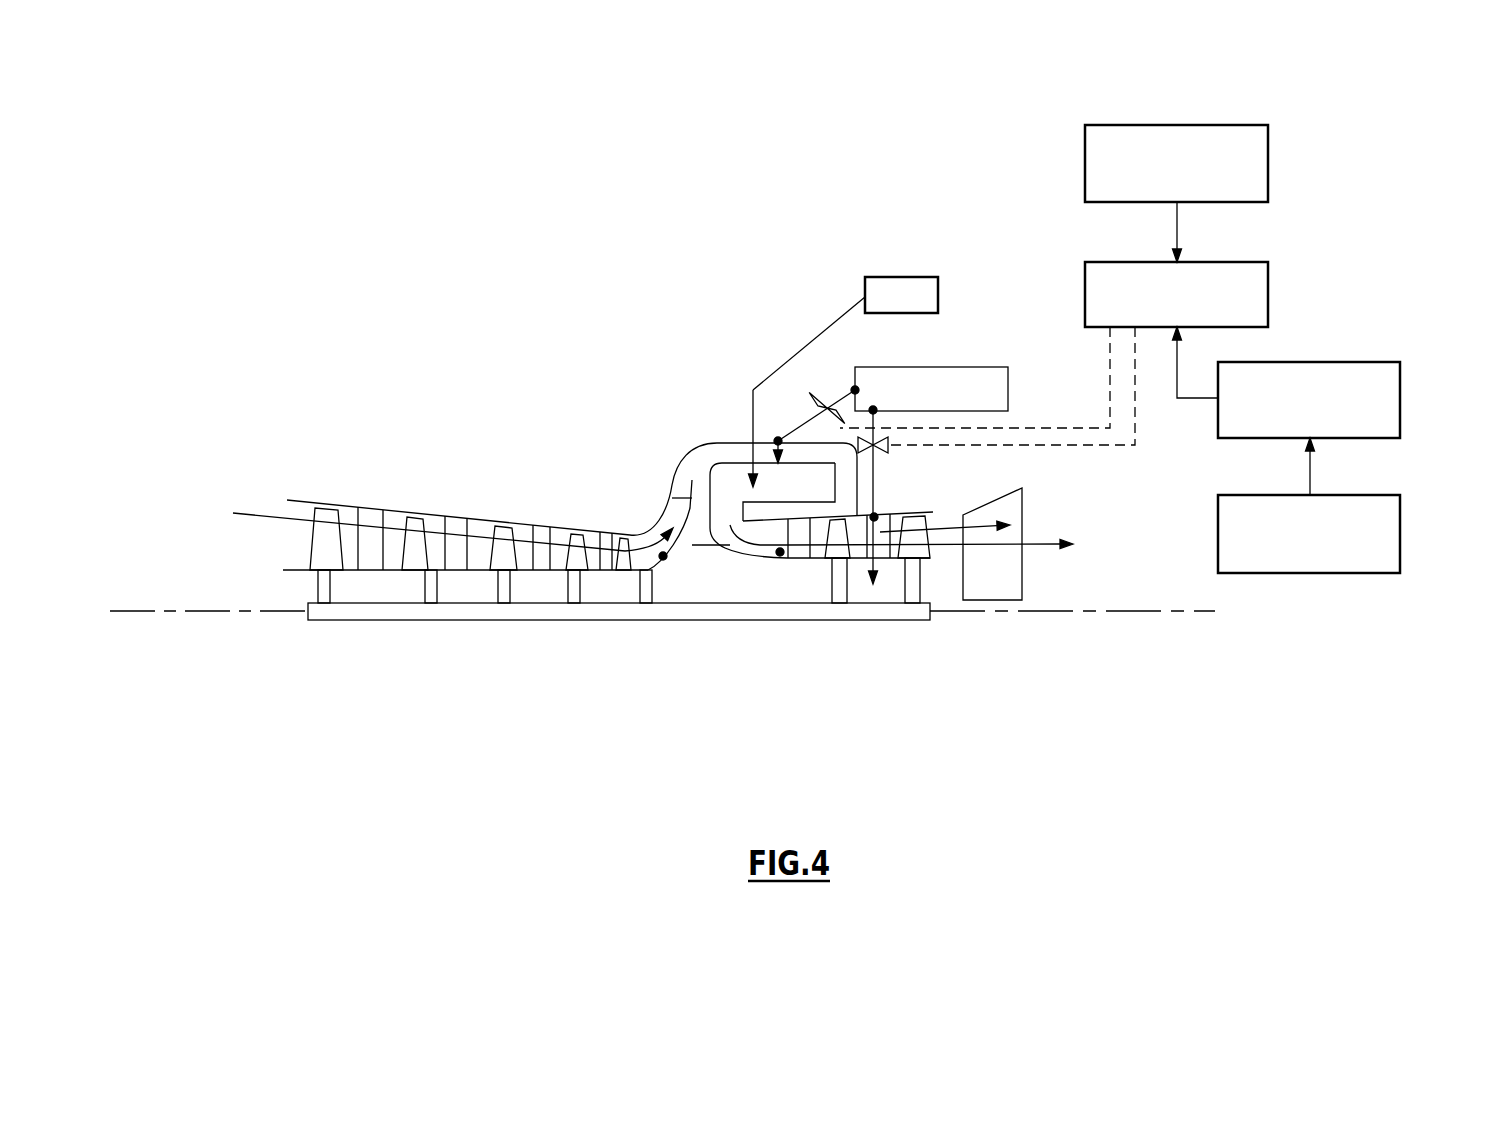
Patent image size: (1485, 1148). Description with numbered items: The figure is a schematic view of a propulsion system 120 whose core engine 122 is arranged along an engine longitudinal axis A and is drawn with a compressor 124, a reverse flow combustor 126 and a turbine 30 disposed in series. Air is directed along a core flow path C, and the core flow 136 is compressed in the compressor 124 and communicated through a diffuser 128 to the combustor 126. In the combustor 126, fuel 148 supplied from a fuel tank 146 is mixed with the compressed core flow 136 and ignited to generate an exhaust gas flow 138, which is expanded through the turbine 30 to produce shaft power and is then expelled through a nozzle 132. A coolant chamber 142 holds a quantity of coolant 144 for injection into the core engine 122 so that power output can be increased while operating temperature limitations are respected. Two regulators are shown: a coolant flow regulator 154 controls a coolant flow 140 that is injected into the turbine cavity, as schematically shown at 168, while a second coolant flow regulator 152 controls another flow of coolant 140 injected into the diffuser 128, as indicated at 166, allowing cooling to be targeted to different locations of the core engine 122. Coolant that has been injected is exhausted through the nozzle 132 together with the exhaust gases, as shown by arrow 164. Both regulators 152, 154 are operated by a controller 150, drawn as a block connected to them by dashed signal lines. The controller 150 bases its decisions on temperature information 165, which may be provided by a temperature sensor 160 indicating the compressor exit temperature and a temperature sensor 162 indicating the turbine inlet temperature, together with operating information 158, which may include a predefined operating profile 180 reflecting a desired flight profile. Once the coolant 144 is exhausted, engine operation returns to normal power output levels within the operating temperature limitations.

The propulsion system 120 is at (298, 247).
The core engine 122 is at (283, 427).
The compressor 124 is at (445, 606).
The reverse flow combustor 126 is at (709, 590).
The turbine 30 is at (913, 615).
The diffuser 128 is at (730, 453).
The nozzle 132 is at (1012, 583).
The core flow 136 is at (481, 559).
The exhaust gas flow 138 is at (957, 547).
The coolant flow 140 is at (753, 395).
The coolant chamber 142 is at (993, 352).
The coolant 144 is at (890, 388).
The fuel tank 146 is at (883, 277).
The fuel 148 is at (818, 335).
The controller 150 is at (1268, 292).
The coolant flow regulator 152 is at (817, 397).
The coolant flow regulator 154 is at (890, 448).
The operating information 158 is at (1400, 407).
The temperature sensor 160 is at (663, 558).
The temperature sensor 162 is at (780, 552).
The arrow 164 is at (985, 516).
The temperature information 165 is at (1268, 169).
The coolant injection into diffuser 166 is at (778, 441).
The coolant injection into turbine cavity 168 is at (890, 518).
The operating profile 180 is at (1400, 541).
The engine longitudinal axis A is at (131, 609).
The core flow path C is at (453, 516).